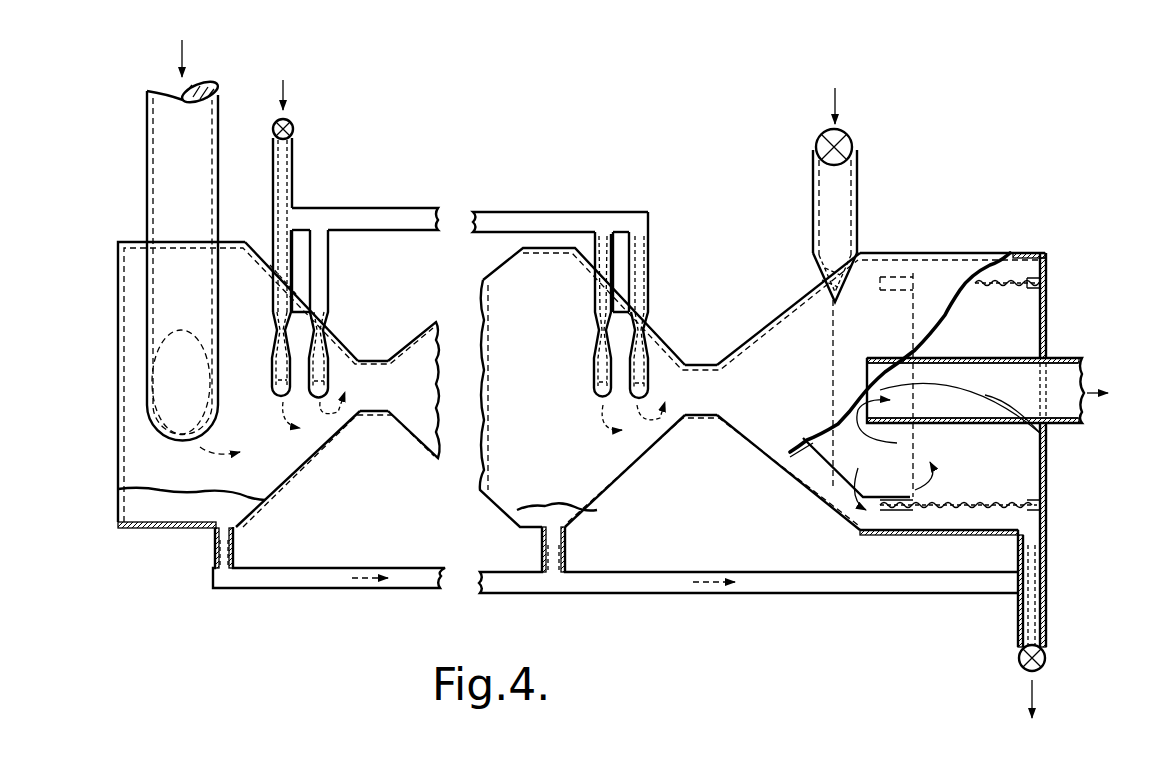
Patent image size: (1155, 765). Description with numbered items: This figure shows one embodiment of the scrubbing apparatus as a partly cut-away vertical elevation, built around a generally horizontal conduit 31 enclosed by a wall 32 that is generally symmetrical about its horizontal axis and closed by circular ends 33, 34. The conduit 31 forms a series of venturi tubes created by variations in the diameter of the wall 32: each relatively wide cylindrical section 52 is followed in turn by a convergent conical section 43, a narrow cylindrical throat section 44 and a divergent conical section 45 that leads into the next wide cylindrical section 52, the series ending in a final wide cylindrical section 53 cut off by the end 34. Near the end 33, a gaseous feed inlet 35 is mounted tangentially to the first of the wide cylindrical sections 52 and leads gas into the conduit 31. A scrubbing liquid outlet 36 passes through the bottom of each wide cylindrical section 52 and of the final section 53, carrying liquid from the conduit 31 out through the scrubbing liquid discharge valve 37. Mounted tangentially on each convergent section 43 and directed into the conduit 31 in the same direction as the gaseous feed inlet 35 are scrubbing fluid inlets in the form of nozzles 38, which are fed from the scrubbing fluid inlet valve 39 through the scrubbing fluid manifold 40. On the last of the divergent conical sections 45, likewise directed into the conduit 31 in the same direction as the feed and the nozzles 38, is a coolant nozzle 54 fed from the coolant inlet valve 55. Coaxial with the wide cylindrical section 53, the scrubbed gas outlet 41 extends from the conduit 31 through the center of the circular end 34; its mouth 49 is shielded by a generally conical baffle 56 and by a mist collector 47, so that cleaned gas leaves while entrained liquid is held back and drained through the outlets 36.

The conduit 31 is at (198, 508).
The wall 32 is at (257, 247).
The circular end 33 is at (118, 287).
The circular end 34 is at (1043, 293).
The gaseous feed inlet 35 is at (218, 137).
The scrubbing liquid outlet 36 is at (327, 582).
The scrubbing liquid discharge valve 37 is at (1020, 658).
The nozzles 38 is at (282, 397).
The scrubbing fluid inlet valve 39 is at (293, 127).
The scrubbing fluid manifold 40 is at (362, 220).
The scrubbed gas outlet 41 is at (1053, 377).
The convergent conical section 43 is at (328, 357).
The cylindrical throat section 44 is at (377, 360).
The divergent conical section 45 is at (417, 330).
The mist collector 47 is at (1010, 283).
The mouth 49 is at (1040, 433).
The cylindrical section 52 is at (233, 243).
The wide cylindrical section 53 is at (943, 253).
The nozzle 54 is at (850, 267).
The coolant inlet valve 55 is at (852, 140).
The conical baffle 56 is at (812, 455).